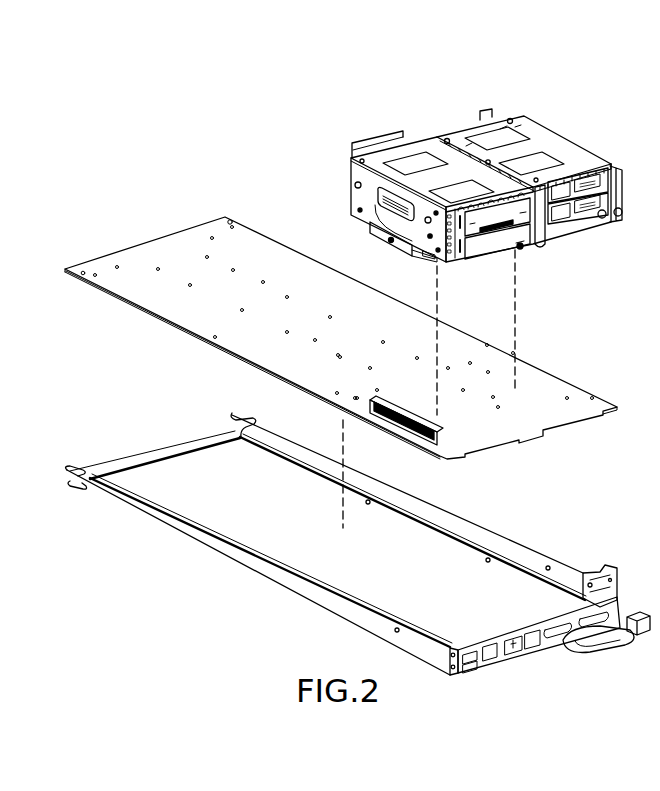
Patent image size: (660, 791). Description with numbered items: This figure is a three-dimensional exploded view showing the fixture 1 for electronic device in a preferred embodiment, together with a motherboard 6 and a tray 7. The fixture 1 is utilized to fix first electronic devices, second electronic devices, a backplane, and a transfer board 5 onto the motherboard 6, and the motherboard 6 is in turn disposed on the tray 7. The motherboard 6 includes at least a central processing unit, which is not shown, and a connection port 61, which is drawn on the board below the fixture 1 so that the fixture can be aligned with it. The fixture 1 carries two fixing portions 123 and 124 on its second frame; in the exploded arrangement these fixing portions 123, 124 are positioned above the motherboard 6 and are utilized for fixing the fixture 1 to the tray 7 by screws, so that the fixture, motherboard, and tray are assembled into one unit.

The fixture for electronic device 1 is at (452, 177).
The transfer board 5 is at (406, 224).
The motherboard 6 is at (341, 335).
The tray 7 is at (166, 462).
The connection port 61 is at (452, 436).
The fixing portion 123 is at (368, 224).
The fixing portion 124 is at (522, 250).